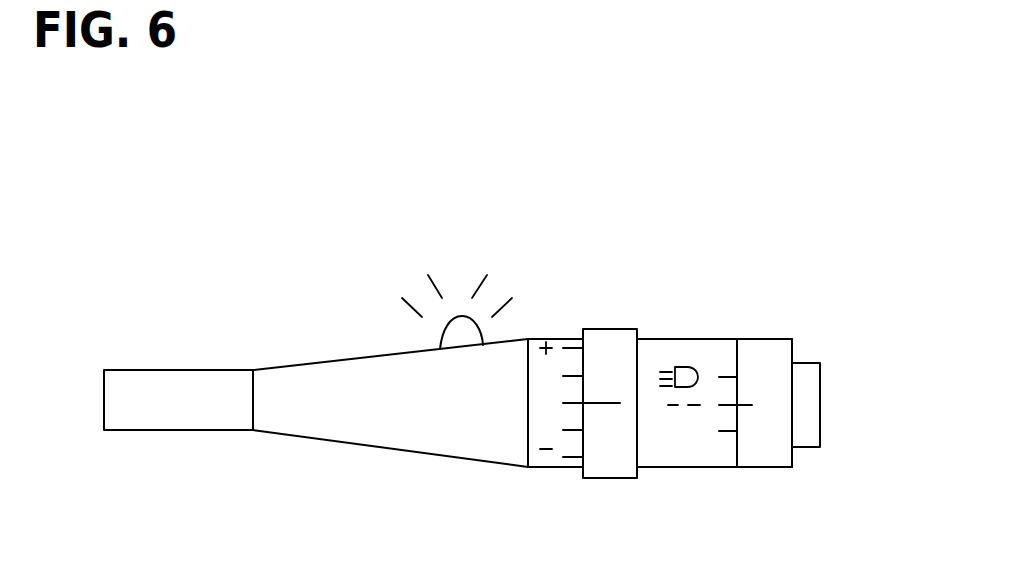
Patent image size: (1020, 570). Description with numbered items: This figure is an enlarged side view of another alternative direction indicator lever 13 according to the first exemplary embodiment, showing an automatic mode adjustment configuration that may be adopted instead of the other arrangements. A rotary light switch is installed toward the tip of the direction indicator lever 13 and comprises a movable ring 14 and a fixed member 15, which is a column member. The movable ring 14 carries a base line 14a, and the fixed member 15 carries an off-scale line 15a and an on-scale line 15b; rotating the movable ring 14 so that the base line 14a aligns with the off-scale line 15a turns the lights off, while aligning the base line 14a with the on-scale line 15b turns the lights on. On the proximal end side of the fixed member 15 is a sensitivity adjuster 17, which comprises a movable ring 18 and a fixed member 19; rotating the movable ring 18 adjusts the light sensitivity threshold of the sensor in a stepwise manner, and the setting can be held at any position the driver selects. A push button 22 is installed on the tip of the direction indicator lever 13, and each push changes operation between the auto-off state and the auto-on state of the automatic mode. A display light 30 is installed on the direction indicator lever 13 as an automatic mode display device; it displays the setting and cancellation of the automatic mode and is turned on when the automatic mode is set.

The direction indicator lever 13 is at (327, 362).
The display light 30 is at (478, 315).
The sensitivity adjuster 17 is at (582, 396).
The movable ring 18 is at (607, 479).
The fixed member 19 is at (553, 468).
The fixed member 15 is at (698, 407).
The off-scale line 15a is at (722, 432).
The on-scale line 15b is at (730, 377).
The movable ring 14 is at (763, 413).
The base line 14a is at (748, 405).
The push button 22 is at (823, 402).